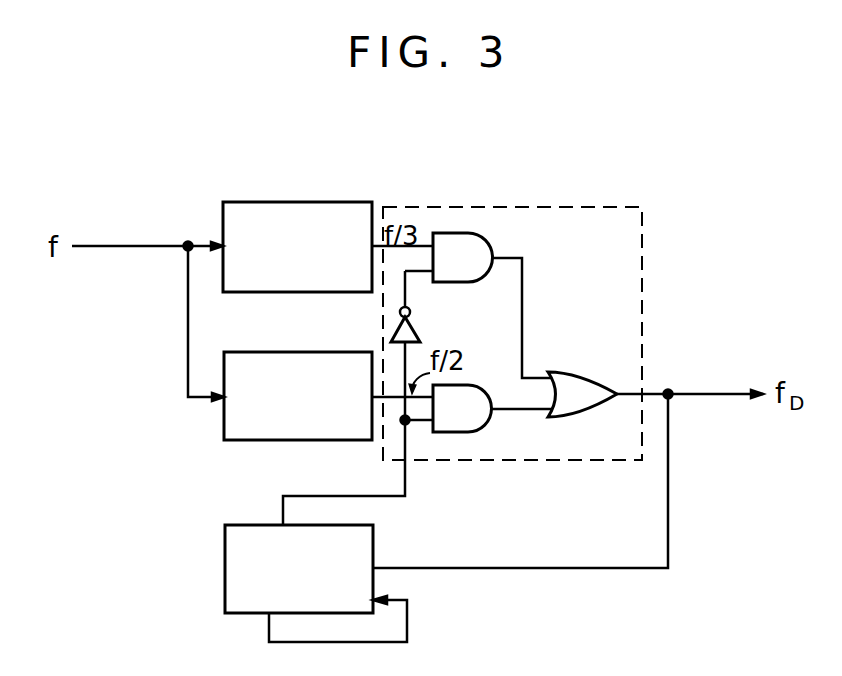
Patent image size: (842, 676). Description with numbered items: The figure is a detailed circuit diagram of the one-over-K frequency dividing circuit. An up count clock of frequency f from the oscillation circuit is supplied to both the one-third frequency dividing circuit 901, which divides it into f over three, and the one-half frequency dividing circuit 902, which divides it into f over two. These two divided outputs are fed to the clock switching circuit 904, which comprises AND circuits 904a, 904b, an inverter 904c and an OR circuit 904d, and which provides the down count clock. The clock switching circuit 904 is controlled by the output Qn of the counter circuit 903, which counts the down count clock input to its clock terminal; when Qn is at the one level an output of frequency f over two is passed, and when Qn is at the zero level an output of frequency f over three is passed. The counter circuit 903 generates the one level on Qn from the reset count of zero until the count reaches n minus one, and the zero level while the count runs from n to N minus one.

The ⅓ frequency dividing circuit 901 is at (325, 202).
The ½ frequency dividing circuit 902 is at (224, 425).
The counter circuit 903 is at (225, 550).
The clock switching circuit 904 is at (642, 244).
The AND circuit 904a is at (494, 236).
The AND circuit 904b is at (478, 433).
The inverter 904c is at (411, 319).
The OR circuit 904d is at (583, 371).